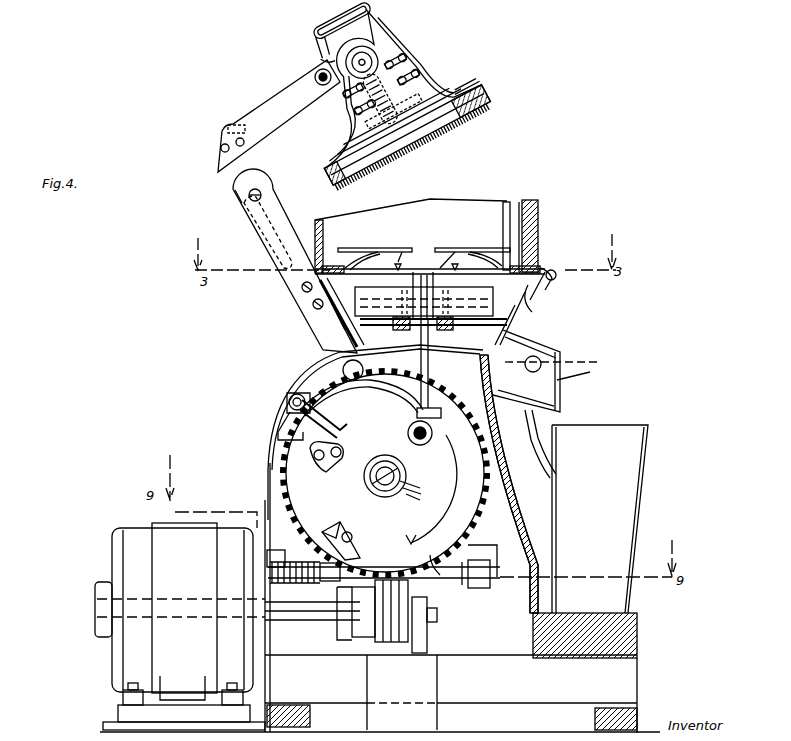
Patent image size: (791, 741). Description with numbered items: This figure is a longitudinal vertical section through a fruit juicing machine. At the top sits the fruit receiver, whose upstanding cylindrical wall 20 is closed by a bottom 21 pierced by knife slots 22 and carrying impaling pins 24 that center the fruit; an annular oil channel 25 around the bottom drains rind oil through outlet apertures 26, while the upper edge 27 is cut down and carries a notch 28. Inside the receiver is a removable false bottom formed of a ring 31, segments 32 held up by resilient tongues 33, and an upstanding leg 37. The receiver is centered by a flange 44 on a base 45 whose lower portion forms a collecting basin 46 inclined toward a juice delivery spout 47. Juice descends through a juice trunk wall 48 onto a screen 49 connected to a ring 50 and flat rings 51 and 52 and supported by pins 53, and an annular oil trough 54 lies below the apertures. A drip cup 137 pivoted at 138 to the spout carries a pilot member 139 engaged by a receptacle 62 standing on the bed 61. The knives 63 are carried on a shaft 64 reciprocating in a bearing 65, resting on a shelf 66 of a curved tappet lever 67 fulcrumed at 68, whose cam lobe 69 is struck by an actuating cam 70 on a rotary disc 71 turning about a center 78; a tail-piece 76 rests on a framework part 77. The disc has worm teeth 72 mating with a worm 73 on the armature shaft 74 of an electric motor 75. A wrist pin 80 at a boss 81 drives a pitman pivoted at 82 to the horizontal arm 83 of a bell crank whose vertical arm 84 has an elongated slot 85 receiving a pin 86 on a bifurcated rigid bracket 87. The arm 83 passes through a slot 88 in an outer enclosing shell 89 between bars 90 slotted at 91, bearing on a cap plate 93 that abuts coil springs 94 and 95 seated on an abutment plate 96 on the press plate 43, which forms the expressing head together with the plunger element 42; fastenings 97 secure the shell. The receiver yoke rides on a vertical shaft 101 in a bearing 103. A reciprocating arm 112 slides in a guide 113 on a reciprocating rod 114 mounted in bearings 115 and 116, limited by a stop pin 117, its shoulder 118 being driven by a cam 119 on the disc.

The upstanding cylindrical wall 20 is at (540, 235).
The bottom 21 is at (448, 266).
The slot 22 is at (418, 265).
The impaling pins 24 is at (403, 262).
The annular oil channel 25 is at (335, 283).
The outlet apertures 26 is at (548, 264).
The upper edge 27 is at (532, 205).
The notch 28 is at (518, 210).
The ring 31 is at (327, 248).
The segments 32 is at (365, 248).
The tongues 33 is at (492, 248).
The upstanding leg 37 is at (512, 212).
The brush row 42 is at (499, 109).
The press plate 43 is at (433, 131).
The flange 44 is at (556, 272).
The base 45 is at (528, 305).
The collecting basin 46 is at (318, 350).
The juice delivery spout 47 is at (562, 362).
The cylindrical wall 48 is at (340, 325).
The screen 49 is at (345, 330).
The ring 50 is at (518, 318).
The flat ring 51 is at (424, 301).
The flat ring 52 is at (455, 325).
The pins 53 is at (482, 375).
The annular oil trough 54 is at (535, 292).
The bed 61 is at (640, 640).
The receptacle 62 is at (632, 492).
The knives 63 is at (425, 265).
The shaft 64 is at (428, 378).
The bearing 65 is at (370, 372).
The shelf 66 is at (441, 414).
The tappet lever 67 is at (383, 400).
The fulcrum 68 is at (287, 400).
The cam lobe 69 is at (348, 437).
The actuating cam 70 is at (328, 470).
The rotary disc 71 is at (305, 492).
The worm teeth 72 is at (270, 480).
The worm 73 is at (390, 642).
The armature shaft 74 is at (315, 620).
The electric motor 75 is at (122, 660).
The tail-piece 76 is at (282, 420).
The framework part 77 is at (276, 440).
The center 78 is at (410, 492).
The wrist pin 80 is at (424, 440).
The boss 81 is at (432, 436).
The pivot 82 is at (315, 72).
The horizontal arm 83 is at (270, 95).
The vertical arm 84 is at (262, 245).
The elongated slot 85 is at (236, 188).
The pin 86 is at (249, 198).
The bifurcated rigid bracket 87 is at (285, 270).
The slot 88 is at (352, 91).
The outer enclosing shell 89 is at (380, 83).
The bars 90 is at (413, 146).
The slots 91 is at (422, 76).
The cap plate 93 is at (389, 42).
The coil spring 94 is at (356, 103).
The coil spring 95 is at (353, 122).
The abutment plate 96 is at (419, 161).
The fastenings 97 is at (484, 75).
The vertical shaft 101 is at (320, 41).
The bearing 103 is at (314, 24).
The reciprocating arm 112 is at (290, 582).
The guide 113 is at (325, 582).
The reciprocating rod 114 is at (460, 585).
The bearing 115 is at (285, 556).
The bearing 116 is at (478, 590).
The stop pin 117 is at (430, 560).
The shoulder 118 is at (358, 548).
The cam 119 is at (345, 532).
The drip cup 137 is at (585, 377).
The pivot 138 is at (560, 360).
The pilot member 139 is at (542, 470).